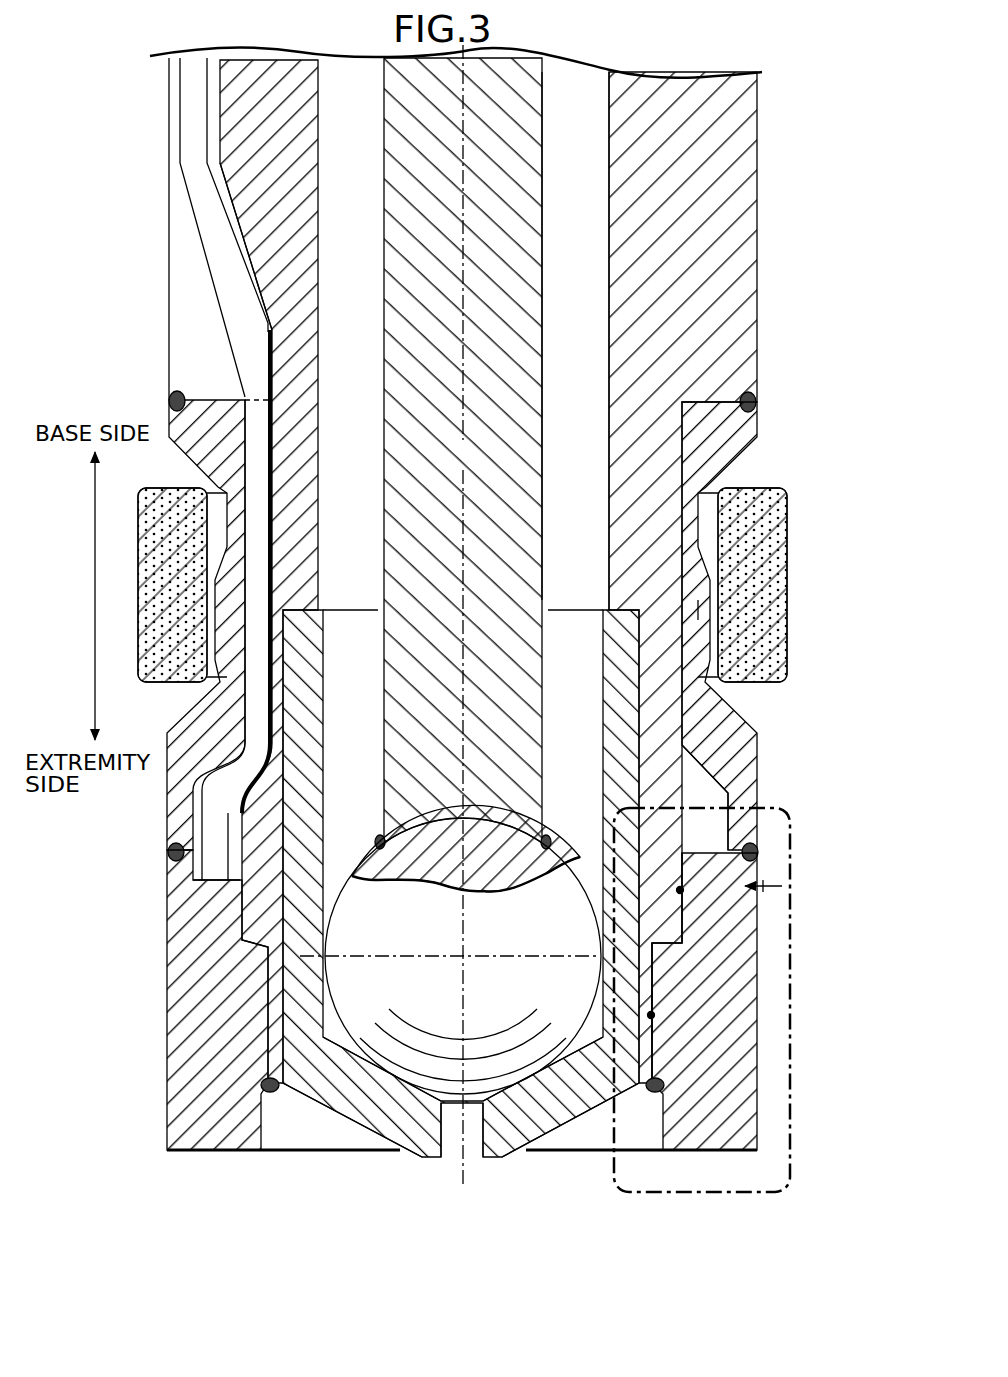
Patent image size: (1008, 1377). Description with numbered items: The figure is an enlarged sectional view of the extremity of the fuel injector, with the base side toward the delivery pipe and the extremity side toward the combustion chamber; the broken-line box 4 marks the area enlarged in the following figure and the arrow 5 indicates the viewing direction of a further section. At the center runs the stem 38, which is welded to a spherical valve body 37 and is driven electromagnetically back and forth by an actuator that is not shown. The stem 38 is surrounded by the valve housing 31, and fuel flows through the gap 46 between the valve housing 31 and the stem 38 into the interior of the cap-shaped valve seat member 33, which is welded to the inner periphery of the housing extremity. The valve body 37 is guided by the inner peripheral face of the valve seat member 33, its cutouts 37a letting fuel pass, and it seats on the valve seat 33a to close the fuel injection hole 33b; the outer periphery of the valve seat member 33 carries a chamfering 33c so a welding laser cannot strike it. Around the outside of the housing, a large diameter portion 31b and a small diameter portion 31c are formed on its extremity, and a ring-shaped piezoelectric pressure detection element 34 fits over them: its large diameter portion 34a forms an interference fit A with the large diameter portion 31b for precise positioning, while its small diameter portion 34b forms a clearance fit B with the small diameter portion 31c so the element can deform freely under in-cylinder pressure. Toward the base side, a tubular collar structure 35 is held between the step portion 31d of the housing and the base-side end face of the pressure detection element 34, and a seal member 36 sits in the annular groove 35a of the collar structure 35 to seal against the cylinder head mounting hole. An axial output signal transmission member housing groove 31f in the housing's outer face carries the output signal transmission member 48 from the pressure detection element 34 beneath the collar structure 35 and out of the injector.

The valve housing 31 is at (762, 226).
The large diameter portion 31b is at (741, 806).
The small diameter portion 31c is at (658, 990).
The step portion 31d is at (752, 403).
The output signal transmission member housing groove 31f is at (257, 278).
The valve seat member 33 is at (508, 1162).
The valve seat 33a is at (393, 1077).
The fuel injection hole 33b is at (448, 1148).
The chamfering 33c is at (327, 1106).
The pressure detection element 34 is at (166, 1000).
The large diameter portion 34a is at (680, 872).
The small diameter portion 34b is at (650, 1012).
The collar structure 35 is at (744, 460).
The annular groove 35a is at (705, 611).
The seal member 36 is at (792, 590).
The valve body 37 is at (418, 948).
The cutouts 37a is at (560, 950).
The stem 38 is at (478, 467).
The gap 46 is at (588, 397).
The output signal transmission member 48 is at (207, 228).
The region shown in FIG. 4 is at (794, 807).
The view direction of FIG. 5 is at (140, 366).
The interference fit A is at (680, 890).
The clearance fit B is at (651, 1015).